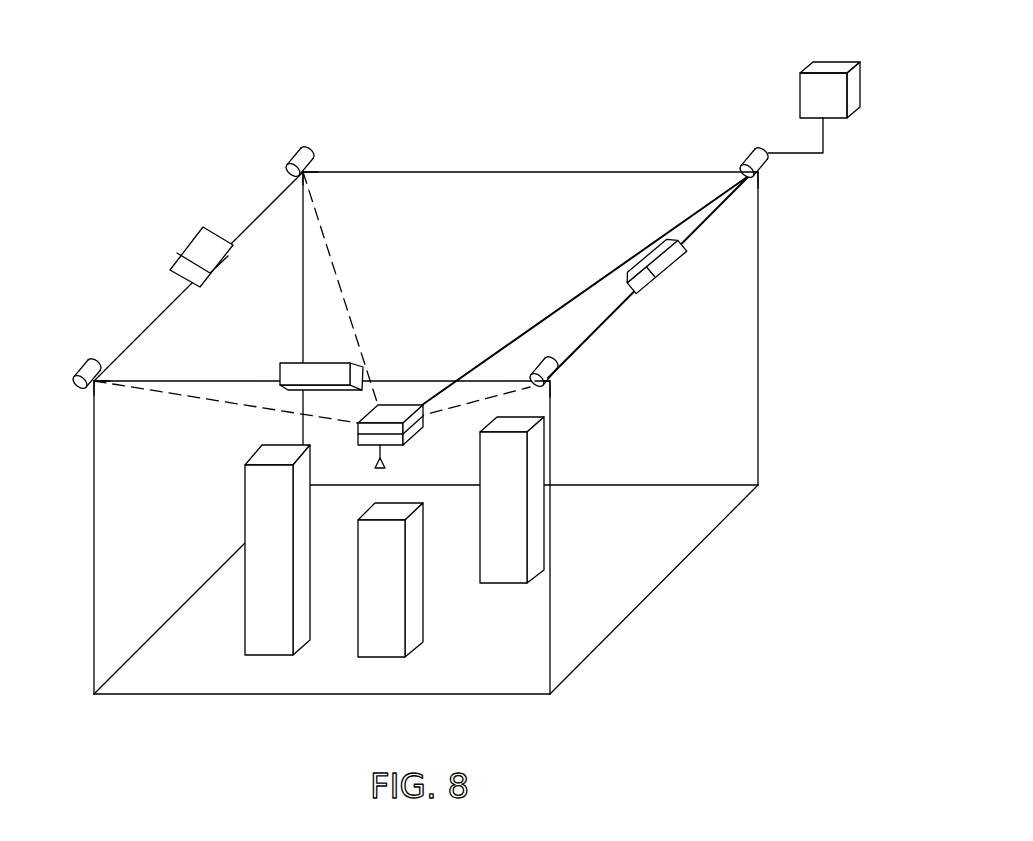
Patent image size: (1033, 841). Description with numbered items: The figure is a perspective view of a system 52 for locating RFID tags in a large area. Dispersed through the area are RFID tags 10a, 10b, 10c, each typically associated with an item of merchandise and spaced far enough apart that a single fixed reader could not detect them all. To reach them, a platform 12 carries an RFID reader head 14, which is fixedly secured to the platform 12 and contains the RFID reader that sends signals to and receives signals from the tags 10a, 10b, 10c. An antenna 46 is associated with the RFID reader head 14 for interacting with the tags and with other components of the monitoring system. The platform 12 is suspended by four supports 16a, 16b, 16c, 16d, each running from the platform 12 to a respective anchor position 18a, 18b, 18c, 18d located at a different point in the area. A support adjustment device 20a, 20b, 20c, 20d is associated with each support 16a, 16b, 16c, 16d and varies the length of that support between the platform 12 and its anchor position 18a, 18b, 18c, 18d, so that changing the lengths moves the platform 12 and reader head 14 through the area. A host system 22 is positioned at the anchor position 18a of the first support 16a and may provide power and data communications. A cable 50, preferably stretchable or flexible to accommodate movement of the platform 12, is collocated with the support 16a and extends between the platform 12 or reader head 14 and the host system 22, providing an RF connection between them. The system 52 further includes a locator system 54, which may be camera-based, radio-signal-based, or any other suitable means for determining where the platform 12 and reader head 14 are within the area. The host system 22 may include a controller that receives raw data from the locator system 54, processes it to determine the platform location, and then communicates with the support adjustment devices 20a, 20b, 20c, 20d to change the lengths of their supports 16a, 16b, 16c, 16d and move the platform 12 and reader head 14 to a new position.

The RFID tag 10a is at (510, 585).
The RFID tag 10b is at (423, 622).
The RFID tag 10c is at (268, 657).
The platform 12 is at (390, 402).
The RFID reader head 14 is at (417, 437).
The support 16a is at (608, 275).
The support 16b is at (530, 388).
The support 16c is at (208, 400).
The support 16d is at (340, 272).
The anchor position 18a is at (760, 176).
The anchor position 18b is at (552, 381).
The anchor position 18c is at (100, 379).
The anchor position 18d is at (308, 170).
The support adjustment device 20a is at (757, 143).
The support adjustment device 20b is at (560, 365).
The support adjustment device 20c is at (81, 364).
The support adjustment device 20d is at (295, 155).
The host system 22 is at (827, 60).
The antenna 46 is at (373, 463).
The cable 50 is at (654, 263).
The system 52 is at (574, 95).
The locator system 54 is at (181, 225).